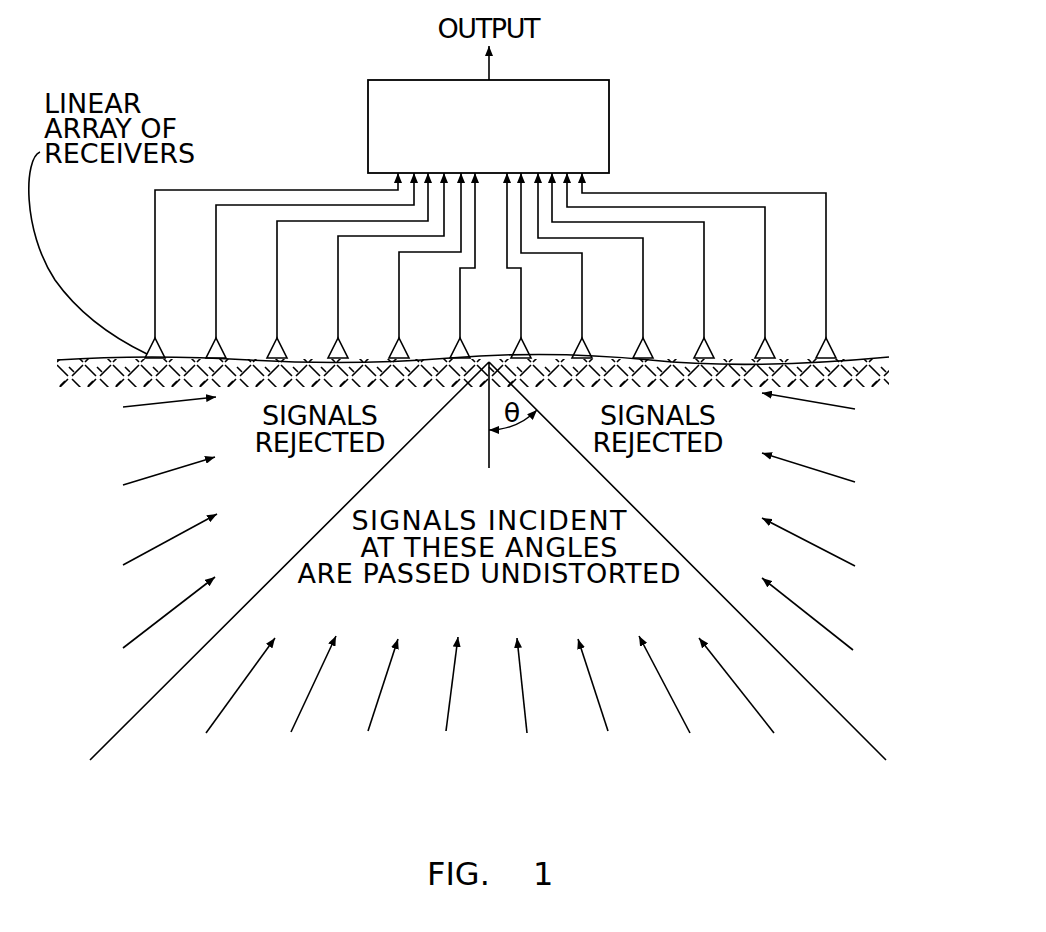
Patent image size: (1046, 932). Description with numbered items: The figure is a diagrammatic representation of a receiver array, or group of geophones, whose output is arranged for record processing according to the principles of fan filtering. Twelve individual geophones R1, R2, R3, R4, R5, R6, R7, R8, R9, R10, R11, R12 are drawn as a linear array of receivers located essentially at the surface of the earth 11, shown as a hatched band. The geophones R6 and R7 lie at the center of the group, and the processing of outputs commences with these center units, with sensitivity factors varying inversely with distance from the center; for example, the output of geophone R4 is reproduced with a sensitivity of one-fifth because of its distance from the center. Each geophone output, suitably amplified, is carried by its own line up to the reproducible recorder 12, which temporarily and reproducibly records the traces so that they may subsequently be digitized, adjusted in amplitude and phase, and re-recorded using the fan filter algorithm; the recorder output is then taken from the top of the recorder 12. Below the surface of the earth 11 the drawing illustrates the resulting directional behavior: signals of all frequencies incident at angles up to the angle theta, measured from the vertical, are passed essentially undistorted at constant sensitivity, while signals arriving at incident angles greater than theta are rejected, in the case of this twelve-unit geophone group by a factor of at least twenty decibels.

The surface of the earth 11 is at (722, 362).
The reproducible recorder 12 is at (609, 134).
The geophone R1 is at (271, 265).
The geophone R2 is at (310, 265).
The geophone R3 is at (347, 265).
The geophone R4 is at (386, 265).
The geophone R5 is at (425, 265).
The geophone R6 is at (474, 265).
The geophone R7 is at (533, 265).
The geophone R8 is at (570, 265).
The geophone R9 is at (609, 265).
The geophone R10 is at (655, 265).
The geophone R11 is at (693, 265).
The geophone R12 is at (731, 265).